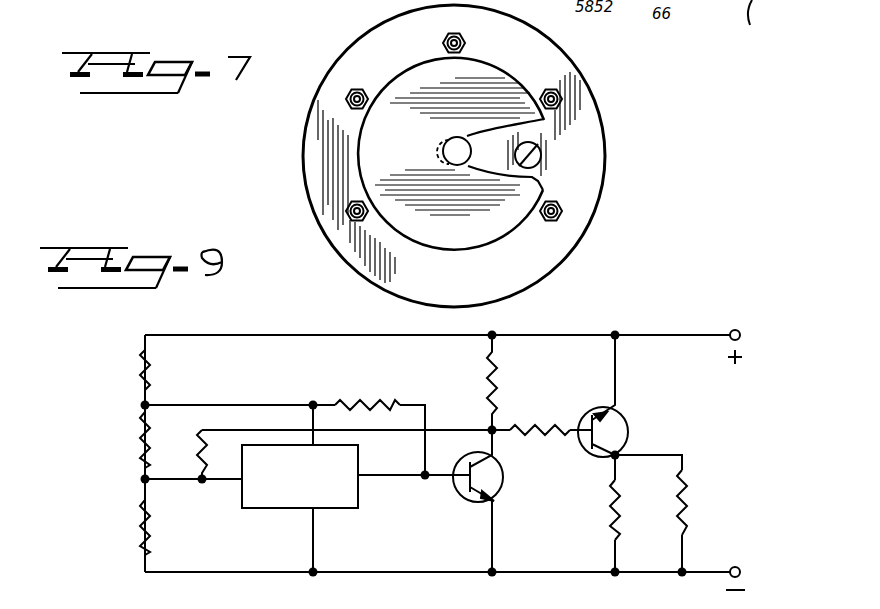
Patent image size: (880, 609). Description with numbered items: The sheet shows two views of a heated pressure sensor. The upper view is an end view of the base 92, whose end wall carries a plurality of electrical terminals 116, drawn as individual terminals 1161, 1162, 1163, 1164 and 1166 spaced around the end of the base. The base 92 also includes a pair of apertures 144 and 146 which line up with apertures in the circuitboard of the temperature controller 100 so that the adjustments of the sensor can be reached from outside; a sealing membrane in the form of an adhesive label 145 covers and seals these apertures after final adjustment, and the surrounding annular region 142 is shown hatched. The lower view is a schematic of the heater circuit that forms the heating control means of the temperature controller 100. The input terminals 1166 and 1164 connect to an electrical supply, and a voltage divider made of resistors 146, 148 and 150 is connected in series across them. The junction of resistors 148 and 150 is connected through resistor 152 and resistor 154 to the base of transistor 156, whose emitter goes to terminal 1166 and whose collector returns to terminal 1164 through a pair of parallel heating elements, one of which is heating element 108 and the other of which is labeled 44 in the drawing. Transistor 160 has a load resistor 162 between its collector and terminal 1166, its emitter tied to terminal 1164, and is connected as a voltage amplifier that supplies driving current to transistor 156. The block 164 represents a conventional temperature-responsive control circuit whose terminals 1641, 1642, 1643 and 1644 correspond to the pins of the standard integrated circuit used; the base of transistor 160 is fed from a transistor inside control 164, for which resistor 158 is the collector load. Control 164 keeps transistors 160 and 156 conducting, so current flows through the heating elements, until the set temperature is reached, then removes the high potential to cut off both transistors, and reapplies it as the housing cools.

In FIG. 7, the base 92 is at (292, 151).
In FIG. 7, the annular mounting ring 142 is at (322, 189).
In FIG. 7, the aperture 144 is at (446, 136).
In FIG. 7, the adhesive label 145 is at (415, 240).
In FIG. 7, the aperture 146 is at (541, 156).
In FIG. 9, the aperture 146 is at (152, 364).
In FIG. 7, the electrical terminals 116 is at (472, 151).
In FIG. 7, the electrical terminal 1161 is at (374, 80).
In FIG. 7, the electrical terminal 1162 is at (443, 43).
In FIG. 7, the electrical terminal 1163 is at (562, 100).
In FIG. 7, the input terminal 1164 is at (545, 224).
In FIG. 9, the input terminal 1164 is at (737, 567).
In FIG. 7, the input terminal 1166 is at (352, 220).
In FIG. 9, the input terminal 1166 is at (738, 330).
In FIG. 9, the temperature controller 100 is at (94, 432).
In FIG. 9, the resistor 148 is at (143, 440).
In FIG. 9, the resistor 150 is at (142, 522).
In FIG. 9, the resistor 152 is at (200, 442).
In FIG. 9, the resistor 154 is at (536, 426).
In FIG. 9, the transistor 156 is at (628, 425).
In FIG. 9, the resistor 158 is at (383, 390).
In FIG. 9, the transistor 160 is at (500, 492).
In FIG. 9, the load resistor 162 is at (488, 383).
In FIG. 9, the temperature-responsive control circuit 164 is at (337, 500).
In FIG. 9, the terminal of control circuit 1641 is at (365, 478).
In FIG. 9, the terminal of control circuit 1642 is at (239, 486).
In FIG. 9, the terminal of control circuit 1643 is at (315, 443).
In FIG. 9, the terminal of control circuit 1644 is at (312, 518).
In FIG. 9, the load resistor 44 is at (612, 508).
In FIG. 9, the heating element 108 is at (684, 500).